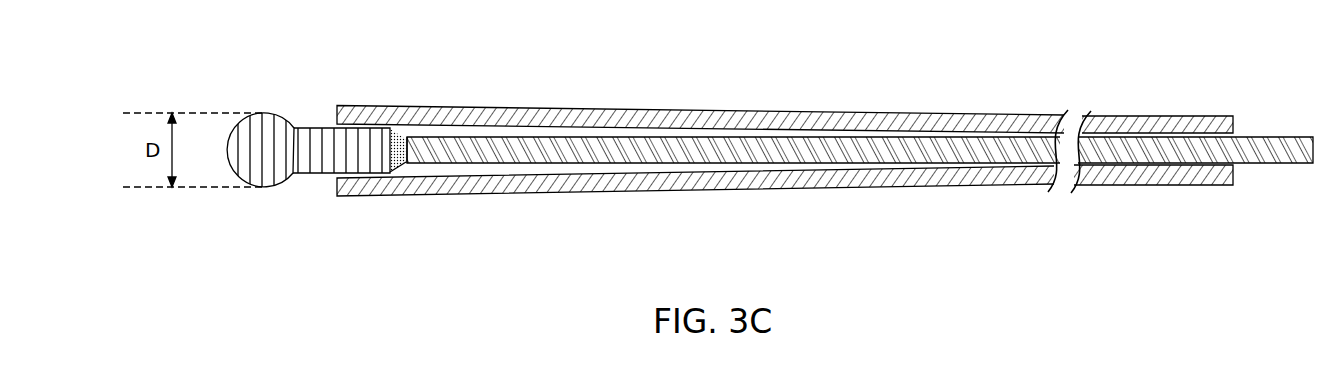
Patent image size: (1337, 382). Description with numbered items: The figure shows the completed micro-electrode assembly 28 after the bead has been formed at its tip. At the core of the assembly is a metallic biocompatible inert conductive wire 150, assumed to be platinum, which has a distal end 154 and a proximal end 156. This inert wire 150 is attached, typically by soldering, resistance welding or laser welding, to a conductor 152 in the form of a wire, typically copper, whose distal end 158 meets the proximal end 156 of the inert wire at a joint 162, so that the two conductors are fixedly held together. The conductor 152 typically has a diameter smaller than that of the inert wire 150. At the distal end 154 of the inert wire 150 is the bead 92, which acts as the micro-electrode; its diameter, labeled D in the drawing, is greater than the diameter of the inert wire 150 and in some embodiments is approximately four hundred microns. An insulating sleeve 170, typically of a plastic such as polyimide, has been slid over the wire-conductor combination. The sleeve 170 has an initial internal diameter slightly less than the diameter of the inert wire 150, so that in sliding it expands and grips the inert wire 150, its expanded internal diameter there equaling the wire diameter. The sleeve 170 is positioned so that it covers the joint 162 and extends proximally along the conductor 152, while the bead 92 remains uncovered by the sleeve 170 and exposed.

The micro-electrode assembly 28 is at (825, 147).
The bead 92 is at (308, 168).
The inert conductive wire 150 is at (310, 127).
The conductor 152 is at (500, 137).
The distal end of inert wire 154 is at (275, 113).
The proximal end of inert wire 156 is at (393, 140).
The distal end of conductor 158 is at (412, 163).
The joint 162 is at (402, 163).
The insulating sleeve 170 is at (675, 110).